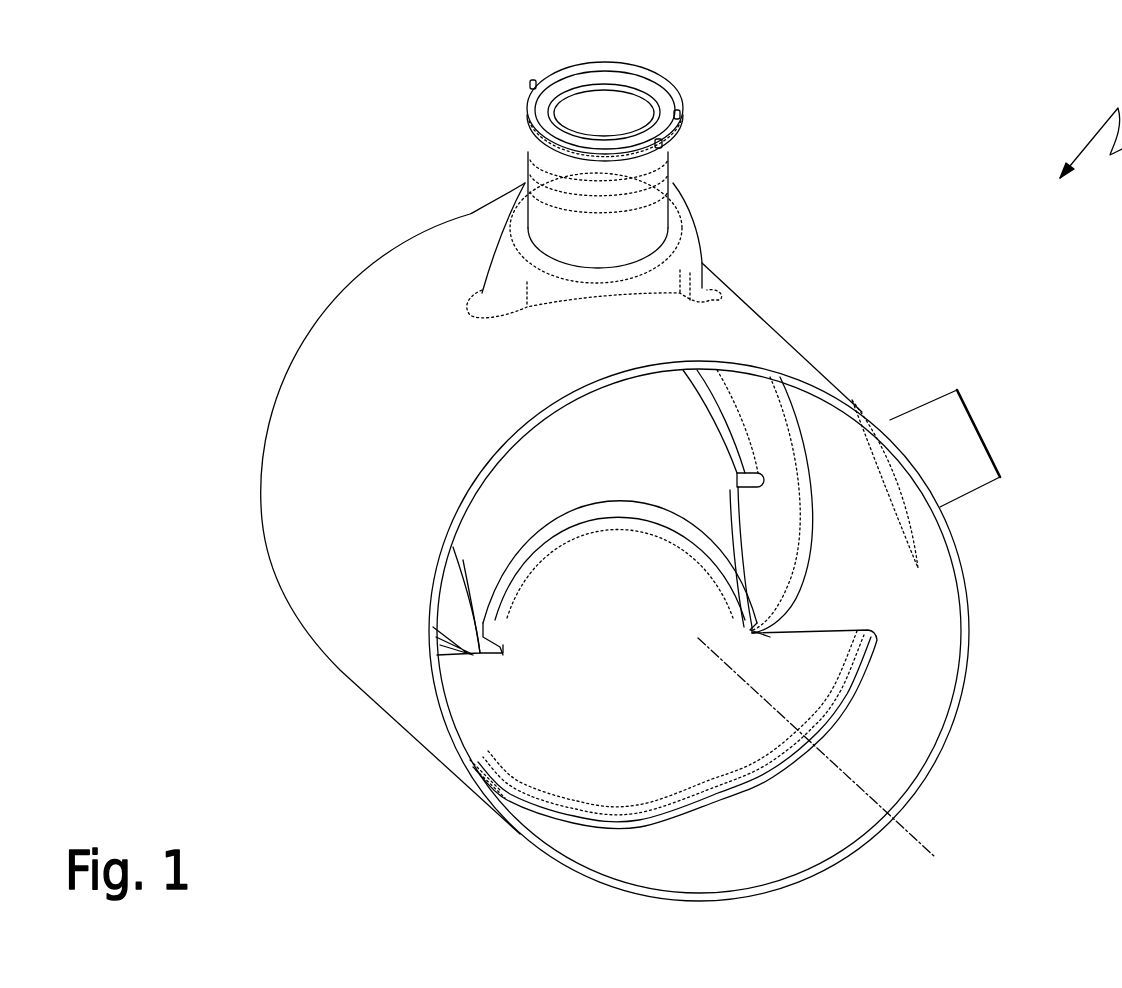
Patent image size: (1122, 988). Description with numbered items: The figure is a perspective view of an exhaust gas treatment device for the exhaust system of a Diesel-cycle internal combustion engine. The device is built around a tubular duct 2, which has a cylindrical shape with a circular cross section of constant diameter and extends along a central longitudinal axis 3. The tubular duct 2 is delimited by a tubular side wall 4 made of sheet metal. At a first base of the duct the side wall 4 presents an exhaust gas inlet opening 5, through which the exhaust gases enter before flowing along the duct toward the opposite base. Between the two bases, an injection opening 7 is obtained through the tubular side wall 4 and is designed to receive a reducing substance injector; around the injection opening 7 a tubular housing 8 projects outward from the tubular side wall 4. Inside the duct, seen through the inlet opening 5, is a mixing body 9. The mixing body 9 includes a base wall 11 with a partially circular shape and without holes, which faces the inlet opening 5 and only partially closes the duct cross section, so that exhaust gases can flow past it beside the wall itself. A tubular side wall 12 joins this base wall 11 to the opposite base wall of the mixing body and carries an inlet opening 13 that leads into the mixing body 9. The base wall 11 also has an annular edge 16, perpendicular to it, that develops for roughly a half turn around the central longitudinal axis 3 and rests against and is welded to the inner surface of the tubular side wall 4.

The tubular duct 2 is at (323, 238).
The central longitudinal axis 3 is at (913, 833).
The tubular side wall 4 is at (318, 438).
The exhaust gas inlet opening 5 is at (922, 645).
The injection opening 7 is at (607, 110).
The tubular housing 8 is at (625, 231).
The mixing body 9 is at (818, 588).
The base wall 11 is at (618, 682).
The tubular side wall 12 is at (597, 450).
The inlet opening 13 is at (467, 580).
The annular edge 16 is at (718, 797).